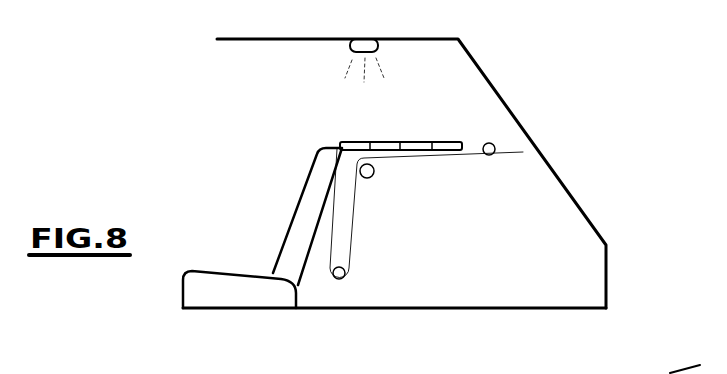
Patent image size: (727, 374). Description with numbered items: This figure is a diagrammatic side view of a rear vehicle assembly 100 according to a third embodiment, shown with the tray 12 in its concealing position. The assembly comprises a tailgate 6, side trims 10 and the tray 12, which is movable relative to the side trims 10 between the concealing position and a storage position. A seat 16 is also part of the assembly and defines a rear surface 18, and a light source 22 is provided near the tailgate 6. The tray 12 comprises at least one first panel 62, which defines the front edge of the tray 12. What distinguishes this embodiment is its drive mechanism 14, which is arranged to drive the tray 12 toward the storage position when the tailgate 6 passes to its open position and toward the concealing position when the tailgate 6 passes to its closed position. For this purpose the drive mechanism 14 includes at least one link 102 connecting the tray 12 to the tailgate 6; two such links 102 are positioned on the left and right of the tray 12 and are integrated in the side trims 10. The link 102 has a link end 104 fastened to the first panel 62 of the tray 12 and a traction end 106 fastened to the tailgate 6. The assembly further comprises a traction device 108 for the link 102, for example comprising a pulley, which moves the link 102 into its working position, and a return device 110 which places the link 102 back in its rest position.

The tailgate 6 is at (478, 63).
The side trims 10 is at (491, 240).
The tray 12 is at (399, 122).
The drive mechanism 14 is at (338, 300).
The seat 16 is at (234, 330).
The rear surface 18 is at (301, 272).
The light source 22 is at (352, 46).
The first panel 62 is at (352, 141).
The rear vehicle assembly 100 is at (174, 157).
The link 102 is at (371, 229).
The link end 104 is at (340, 150).
The traction end 106 is at (523, 152).
The traction device 108 is at (374, 176).
The return device 110 is at (345, 275).